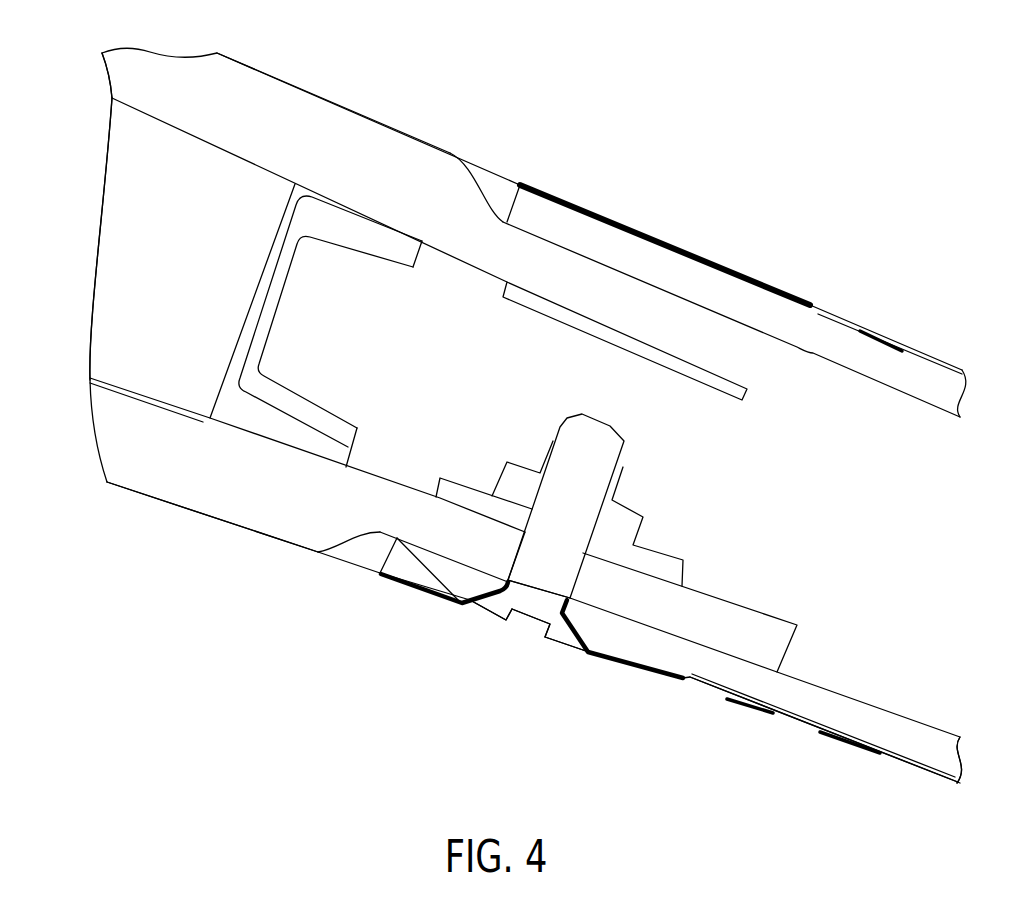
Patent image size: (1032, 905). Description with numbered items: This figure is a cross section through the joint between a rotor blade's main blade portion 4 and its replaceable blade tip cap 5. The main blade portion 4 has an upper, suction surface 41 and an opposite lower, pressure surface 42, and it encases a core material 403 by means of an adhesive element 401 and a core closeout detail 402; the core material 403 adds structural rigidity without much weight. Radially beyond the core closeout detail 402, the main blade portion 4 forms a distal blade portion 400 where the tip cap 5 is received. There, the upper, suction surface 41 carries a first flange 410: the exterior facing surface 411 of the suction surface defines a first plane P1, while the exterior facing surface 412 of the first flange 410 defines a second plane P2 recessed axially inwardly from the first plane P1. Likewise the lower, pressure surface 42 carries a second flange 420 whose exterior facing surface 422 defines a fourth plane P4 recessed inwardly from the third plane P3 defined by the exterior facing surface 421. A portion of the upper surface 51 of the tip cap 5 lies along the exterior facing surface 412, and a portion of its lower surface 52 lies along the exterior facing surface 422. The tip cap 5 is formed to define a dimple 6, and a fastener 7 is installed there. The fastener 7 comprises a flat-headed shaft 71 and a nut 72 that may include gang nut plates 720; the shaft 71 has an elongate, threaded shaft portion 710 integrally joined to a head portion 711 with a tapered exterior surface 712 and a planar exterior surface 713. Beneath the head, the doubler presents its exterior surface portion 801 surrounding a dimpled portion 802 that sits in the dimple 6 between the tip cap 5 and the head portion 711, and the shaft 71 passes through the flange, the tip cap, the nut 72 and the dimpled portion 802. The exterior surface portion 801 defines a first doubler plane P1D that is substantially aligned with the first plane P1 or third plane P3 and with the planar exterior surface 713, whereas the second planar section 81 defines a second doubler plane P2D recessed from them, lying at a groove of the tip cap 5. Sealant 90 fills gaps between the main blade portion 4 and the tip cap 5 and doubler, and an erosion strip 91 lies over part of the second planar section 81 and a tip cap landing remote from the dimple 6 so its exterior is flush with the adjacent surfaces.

The main blade portion 4 is at (221, 131).
The upper, suction surface 41 is at (117, 68).
The lower, pressure surface 42 is at (117, 474).
The core material 403 is at (113, 250).
The adhesive element 401 is at (250, 317).
The core closeout detail 402 is at (227, 398).
The exterior facing surface 411 is at (338, 102).
The first flange 410 is at (523, 242).
The exterior facing surface 412 is at (647, 280).
The distal blade portion 400 is at (493, 63).
The upper surface 51 is at (957, 393).
The replaceable blade tip cap 5 is at (911, 753).
The lower surface 52 is at (953, 750).
The fastener 7 is at (595, 430).
The flat-headed shaft 71 is at (532, 592).
The nut 72 is at (493, 497).
The gang nut plates 720 is at (650, 566).
The shaft portion 710 is at (520, 540).
The head portion 711 is at (552, 640).
The tapered exterior surface 712 is at (582, 647).
The planar exterior surface 713 is at (497, 622).
The dimple 6 is at (477, 575).
The sealant 90 is at (342, 554).
The erosion strip 91 is at (822, 737).
The exterior surface portion 801 is at (380, 575).
The dimpled portion 802 is at (590, 630).
The second planar section 81 is at (743, 700).
The second flange 420 is at (403, 585).
The exterior facing surface 421 is at (188, 510).
The exterior facing surface 422 is at (450, 573).
The first plane P1 is at (418, 105).
The second plane P2 is at (768, 298).
The third plane P3 is at (122, 497).
The fourth plane P4 is at (670, 652).
The first doubler plane P1D is at (617, 672).
The second doubler plane P2D is at (703, 695).